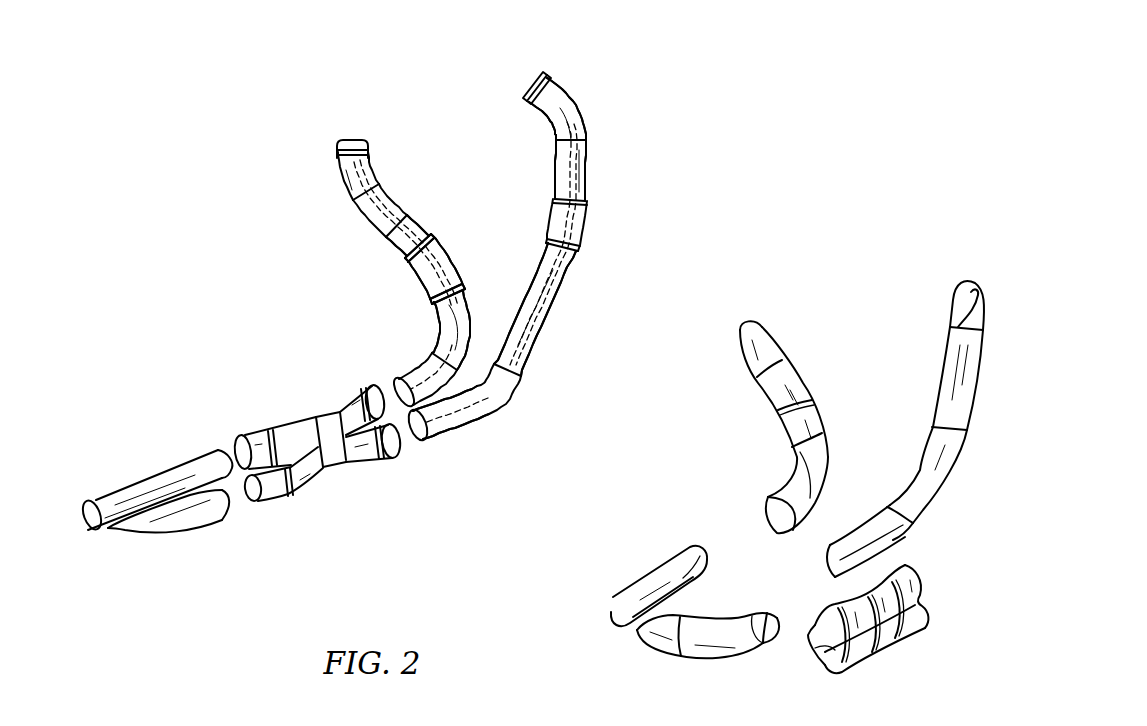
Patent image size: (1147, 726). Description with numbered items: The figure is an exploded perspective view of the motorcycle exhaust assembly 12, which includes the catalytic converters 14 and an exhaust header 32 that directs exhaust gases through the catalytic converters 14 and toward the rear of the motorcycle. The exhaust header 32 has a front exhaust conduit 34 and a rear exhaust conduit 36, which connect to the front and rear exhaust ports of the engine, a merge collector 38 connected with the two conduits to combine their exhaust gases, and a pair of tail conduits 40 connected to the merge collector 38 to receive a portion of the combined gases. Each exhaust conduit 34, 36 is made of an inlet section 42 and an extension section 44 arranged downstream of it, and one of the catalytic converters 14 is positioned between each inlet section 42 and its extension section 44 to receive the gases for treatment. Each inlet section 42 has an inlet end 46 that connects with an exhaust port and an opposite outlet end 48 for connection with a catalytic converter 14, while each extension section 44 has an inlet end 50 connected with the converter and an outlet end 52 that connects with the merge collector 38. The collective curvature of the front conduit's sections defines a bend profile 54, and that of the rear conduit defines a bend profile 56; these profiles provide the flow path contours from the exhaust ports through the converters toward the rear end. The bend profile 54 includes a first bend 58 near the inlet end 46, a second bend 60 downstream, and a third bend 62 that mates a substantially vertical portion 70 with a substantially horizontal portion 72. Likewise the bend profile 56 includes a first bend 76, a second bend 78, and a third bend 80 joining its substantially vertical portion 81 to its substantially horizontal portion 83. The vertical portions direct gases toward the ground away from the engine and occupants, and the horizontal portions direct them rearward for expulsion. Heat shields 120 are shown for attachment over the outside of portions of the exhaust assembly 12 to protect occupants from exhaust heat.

The exhaust assembly 12 is at (615, 100).
The catalytic converter 14 is at (410, 290).
The exhaust header 32 is at (330, 150).
The front exhaust conduit 34 is at (625, 150).
The rear exhaust conduit 36 is at (310, 242).
The merge collector 38 is at (330, 482).
The tail conduit 40 is at (136, 462).
The inlet section 42 is at (353, 213).
The extension section 44 is at (432, 340).
The inlet end 46 is at (355, 133).
The outlet end 48 is at (425, 225).
The inlet end 50 is at (432, 318).
The outlet end 52 is at (403, 370).
The bend profile 54 is at (483, 415).
The bend profile 56 is at (434, 266).
The first bend 58 is at (573, 90).
The second bend 60 is at (550, 270).
The third bend 62 is at (515, 407).
The portion 70 is at (540, 300).
The portion 72 is at (445, 432).
The first bend 76 is at (386, 158).
The second bend 78 is at (390, 247).
The third bend 80 is at (470, 360).
The portion 81 is at (420, 215).
The portion 83 is at (440, 352).
The heat shield 120 is at (875, 280).